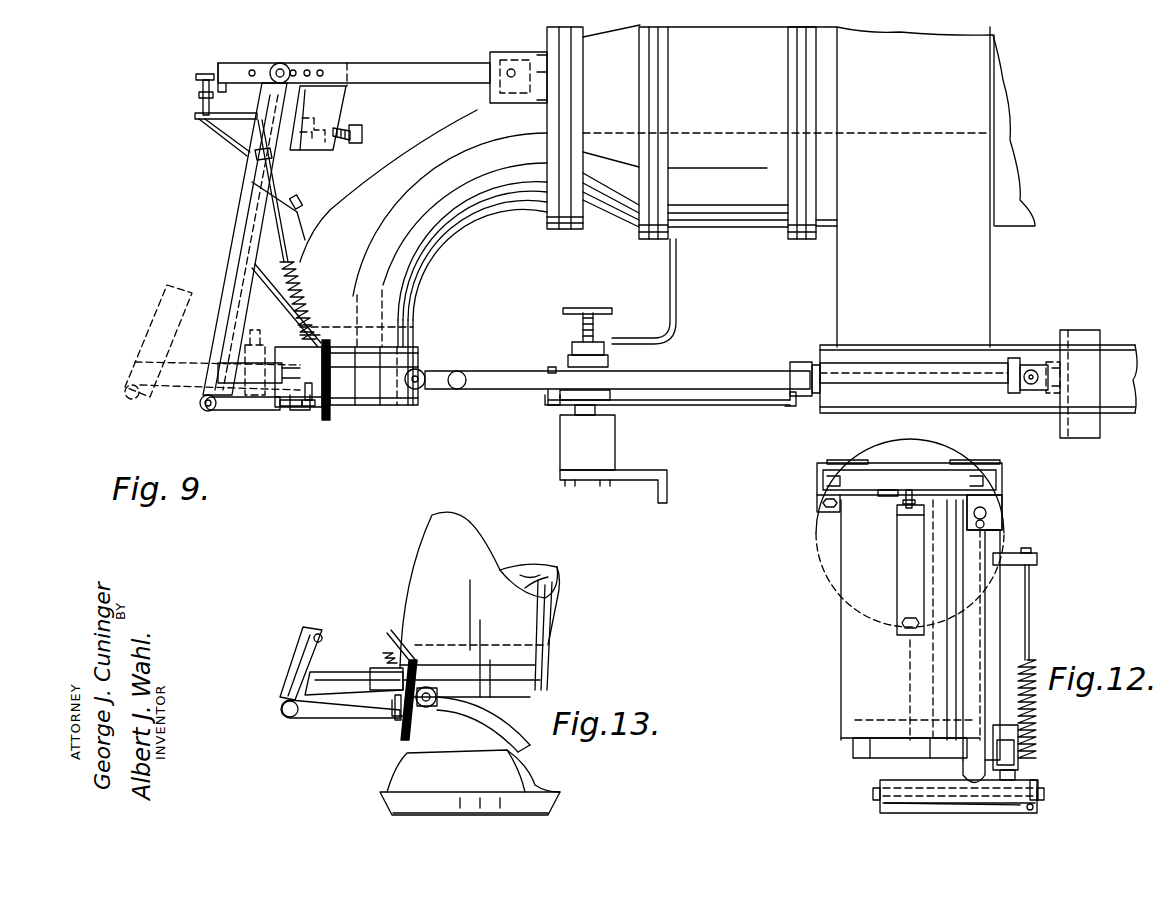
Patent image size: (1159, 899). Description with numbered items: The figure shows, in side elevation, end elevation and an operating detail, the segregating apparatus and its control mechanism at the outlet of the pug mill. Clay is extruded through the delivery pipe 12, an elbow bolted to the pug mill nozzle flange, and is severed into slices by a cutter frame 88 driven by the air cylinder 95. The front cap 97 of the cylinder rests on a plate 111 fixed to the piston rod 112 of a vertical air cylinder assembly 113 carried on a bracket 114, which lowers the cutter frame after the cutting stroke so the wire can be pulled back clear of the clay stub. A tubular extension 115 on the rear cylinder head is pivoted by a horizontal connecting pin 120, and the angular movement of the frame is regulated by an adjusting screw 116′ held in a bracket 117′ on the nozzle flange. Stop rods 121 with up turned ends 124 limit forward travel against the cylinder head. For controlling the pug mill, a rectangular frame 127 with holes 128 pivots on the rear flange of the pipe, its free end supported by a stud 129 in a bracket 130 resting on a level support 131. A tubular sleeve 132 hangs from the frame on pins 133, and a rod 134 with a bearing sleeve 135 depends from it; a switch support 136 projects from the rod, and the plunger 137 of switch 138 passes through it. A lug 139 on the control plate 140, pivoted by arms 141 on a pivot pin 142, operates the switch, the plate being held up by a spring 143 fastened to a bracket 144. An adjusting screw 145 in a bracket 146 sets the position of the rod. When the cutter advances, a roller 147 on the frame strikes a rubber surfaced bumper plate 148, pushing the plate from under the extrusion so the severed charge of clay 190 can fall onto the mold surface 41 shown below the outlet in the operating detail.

In FIG. 9, the delivery pipe 12 is at (448, 248).
In FIG. 12, the delivery pipe 12 is at (850, 674).
In FIG. 13, the delivery pipe 12 is at (414, 540).
In FIG. 13, the base 41 is at (560, 792).
In FIG. 9, the cutter frame 88 is at (512, 390).
In FIG. 9, the air cylinder 95 is at (795, 360).
In FIG. 9, the front cap 97 is at (570, 358).
In FIG. 9, the plate 111 is at (556, 408).
In FIG. 9, the piston rod 112 is at (615, 415).
In FIG. 9, the air cylinder assembly 113 is at (616, 450).
In FIG. 9, the bracket 114 is at (668, 490).
In FIG. 9, the tubular extension 115 is at (935, 332).
In FIG. 9, the adjusting screw 116′ is at (583, 308).
In FIG. 9, the bracket 117′ is at (677, 290).
In FIG. 9, the connecting pin 120 is at (1038, 368).
In FIG. 9, the stop rods 121 is at (728, 408).
In FIG. 9, the up turned ends 124 is at (791, 410).
In FIG. 9, the rectangular frame 127 is at (258, 63).
In FIG. 9, the holes 128 is at (251, 78).
In FIG. 9, the stud 129 is at (200, 104).
In FIG. 12, the stud 129 is at (880, 523).
In FIG. 9, the bracket 130 is at (214, 70).
In FIG. 12, the bracket 130 is at (884, 498).
In FIG. 9, the level support 131 is at (232, 128).
In FIG. 12, the level support 131 is at (902, 522).
In FIG. 9, the tubular sleeve 132 is at (285, 62).
In FIG. 12, the pins 133 is at (814, 478).
In FIG. 9, the rod 134 is at (236, 226).
In FIG. 13, the rod 134 is at (302, 644).
In FIG. 12, the bearing sleeve 135 is at (888, 782).
In FIG. 9, the switch support 136 is at (205, 388).
In FIG. 13, the switch support 136 is at (310, 683).
In FIG. 9, the plunger 137 is at (314, 408).
In FIG. 13, the plunger 137 is at (398, 722).
In FIG. 9, the switch 138 is at (252, 398).
In FIG. 12, the switch 138 is at (1035, 755).
In FIG. 13, the switch 138 is at (374, 672).
In FIG. 9, the lug 139 is at (305, 414).
In FIG. 13, the lug 139 is at (392, 718).
In FIG. 9, the control plate 140 is at (288, 414).
In FIG. 12, the control plate 140 is at (880, 793).
In FIG. 13, the control plate 140 is at (378, 722).
In FIG. 12, the arms 141 is at (873, 806).
In FIG. 12, the pivot pin 142 is at (1040, 790).
In FIG. 12, the spring 143 is at (1020, 742).
In FIG. 13, the spring 143 is at (383, 645).
In FIG. 12, the bracket 144 is at (1012, 555).
In FIG. 9, the adjusting screw 145 is at (362, 134).
In FIG. 9, the bracket 146 is at (345, 95).
In FIG. 12, the bracket 146 is at (1000, 520).
In FIG. 9, the roller 147 is at (420, 368).
In FIG. 13, the roller 147 is at (430, 688).
In FIG. 9, the bumper plate 148 is at (332, 405).
In FIG. 13, the bumper plate 148 is at (412, 732).
In FIG. 13, the charge of clay 190 is at (526, 750).